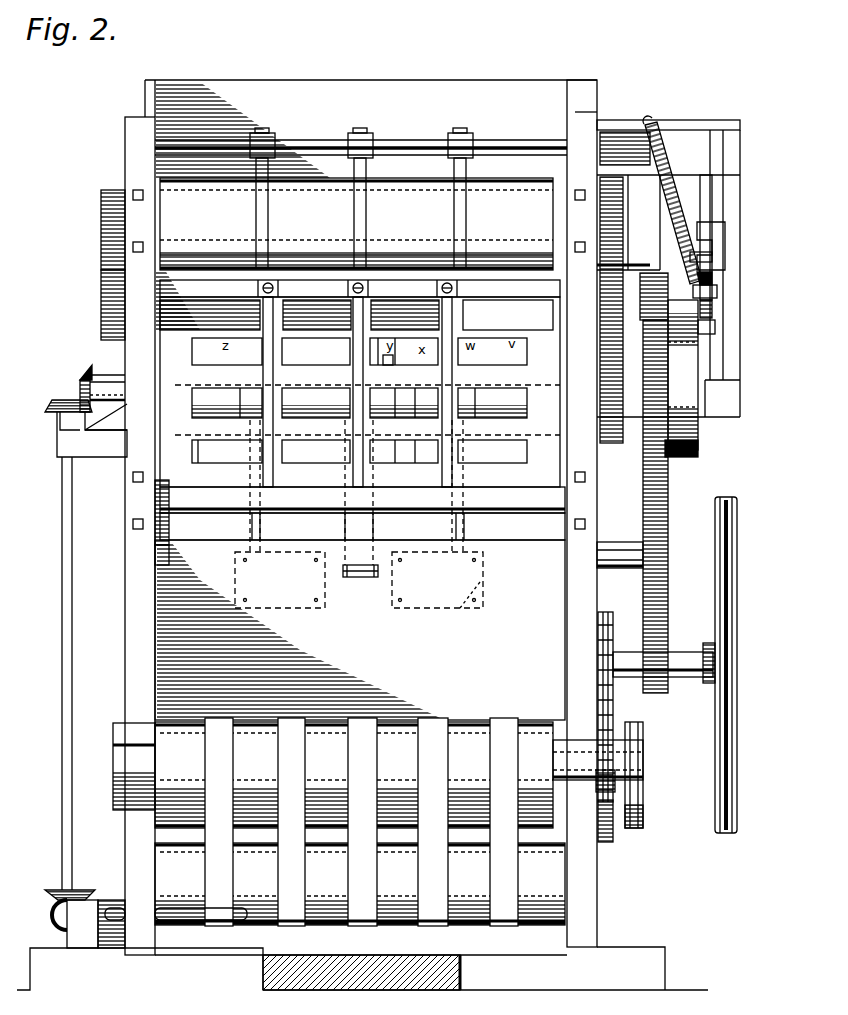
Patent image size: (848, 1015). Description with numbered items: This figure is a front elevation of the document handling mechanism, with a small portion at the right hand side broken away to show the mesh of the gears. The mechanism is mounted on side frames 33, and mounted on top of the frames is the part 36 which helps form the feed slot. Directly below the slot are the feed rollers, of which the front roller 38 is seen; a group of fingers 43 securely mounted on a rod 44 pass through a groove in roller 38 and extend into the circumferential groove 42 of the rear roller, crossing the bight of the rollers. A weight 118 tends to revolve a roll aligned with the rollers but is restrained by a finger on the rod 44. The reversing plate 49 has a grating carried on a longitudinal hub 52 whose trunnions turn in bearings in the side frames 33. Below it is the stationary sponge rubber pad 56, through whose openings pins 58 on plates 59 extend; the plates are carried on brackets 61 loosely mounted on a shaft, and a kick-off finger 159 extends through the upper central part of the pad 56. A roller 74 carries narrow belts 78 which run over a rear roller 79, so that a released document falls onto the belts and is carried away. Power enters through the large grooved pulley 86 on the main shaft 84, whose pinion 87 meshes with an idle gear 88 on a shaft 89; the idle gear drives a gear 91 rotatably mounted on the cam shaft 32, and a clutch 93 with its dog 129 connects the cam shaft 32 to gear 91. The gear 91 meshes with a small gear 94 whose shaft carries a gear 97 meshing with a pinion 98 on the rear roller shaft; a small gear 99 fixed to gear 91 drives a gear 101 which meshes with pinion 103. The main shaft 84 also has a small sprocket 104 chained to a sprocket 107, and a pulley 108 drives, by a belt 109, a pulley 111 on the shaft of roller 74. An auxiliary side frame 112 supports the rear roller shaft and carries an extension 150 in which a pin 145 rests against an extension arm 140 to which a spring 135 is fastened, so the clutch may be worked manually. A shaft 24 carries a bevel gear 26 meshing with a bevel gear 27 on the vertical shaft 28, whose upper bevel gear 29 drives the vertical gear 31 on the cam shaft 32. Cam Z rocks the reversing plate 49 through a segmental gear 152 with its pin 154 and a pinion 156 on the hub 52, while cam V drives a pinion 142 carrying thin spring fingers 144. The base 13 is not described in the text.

The base block 13 is at (312, 990).
The shaft 24 is at (202, 920).
The bevel gear 26 is at (55, 917).
The bevel gear 27 is at (45, 893).
The vertical shaft 28 is at (62, 812).
The bevel gear 29 is at (48, 401).
The vertical gear 31 is at (80, 371).
The cam shaft 32 is at (103, 376).
The side frames 33 is at (125, 507).
The part constituting the feed slot 36 is at (145, 101).
The feed roller 38 is at (356, 224).
The circumferential groove 42 is at (370, 262).
The fingers 43 is at (360, 185).
The rod 44 is at (505, 145).
The reversing plate 49 is at (359, 393).
The longitudinal hub 52 is at (200, 513).
The pad 56 is at (360, 630).
The pins 58 is at (318, 605).
The plates 59 is at (460, 610).
The brackets 61 is at (260, 527).
The roller 74 is at (333, 775).
The narrow belts 78 is at (361, 822).
The roller 79 is at (360, 884).
The main shaft 84 is at (618, 652).
The large grooved pulley 86 is at (730, 650).
The pinion 87 is at (658, 658).
The idle gear 88 is at (668, 513).
The shaft 89 is at (617, 568).
The gear 91 is at (672, 457).
The clutch 93 is at (687, 370).
The small gear 94 is at (716, 278).
The gear 97 is at (101, 294).
The pinion 98 is at (101, 226).
The small gear 99 is at (614, 443).
The gear 101 is at (660, 325).
The pinion 103 is at (610, 268).
The small sprocket 104 is at (608, 694).
The sprocket 107 is at (714, 310).
The pulley 108 is at (643, 816).
The belt 109 is at (635, 748).
The pulley 111 is at (642, 792).
The auxiliary side frame 112 is at (728, 345).
The weight 118 is at (612, 208).
The dog 129 is at (716, 327).
The spring 135 is at (676, 197).
The extension arm 140 is at (718, 292).
The pinion 142 is at (552, 298).
The thin spring fingers 144 is at (445, 310).
The pin 145 is at (714, 207).
The extension 150 is at (728, 257).
The segmental gear 152 is at (155, 547).
The pin 154 is at (198, 452).
The pinion 156 is at (155, 512).
The kick-off finger 159 is at (374, 527).